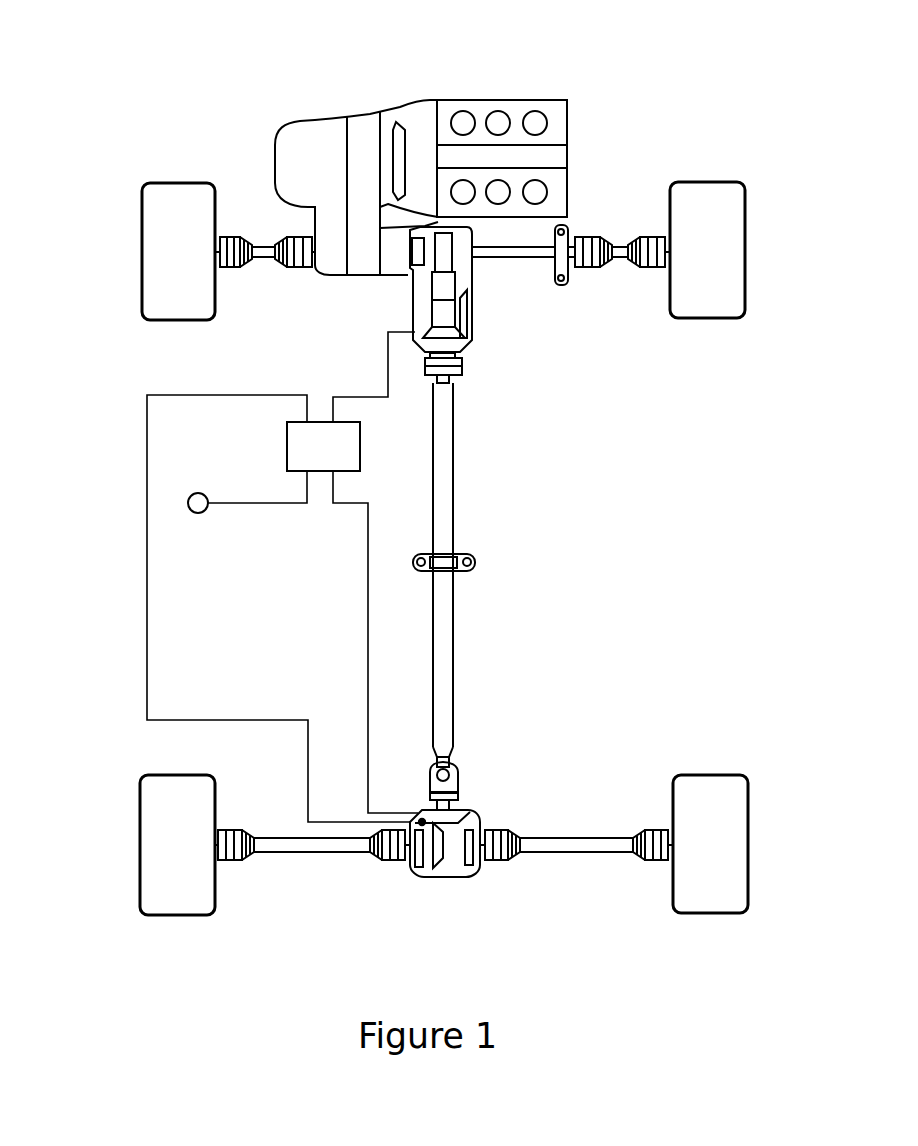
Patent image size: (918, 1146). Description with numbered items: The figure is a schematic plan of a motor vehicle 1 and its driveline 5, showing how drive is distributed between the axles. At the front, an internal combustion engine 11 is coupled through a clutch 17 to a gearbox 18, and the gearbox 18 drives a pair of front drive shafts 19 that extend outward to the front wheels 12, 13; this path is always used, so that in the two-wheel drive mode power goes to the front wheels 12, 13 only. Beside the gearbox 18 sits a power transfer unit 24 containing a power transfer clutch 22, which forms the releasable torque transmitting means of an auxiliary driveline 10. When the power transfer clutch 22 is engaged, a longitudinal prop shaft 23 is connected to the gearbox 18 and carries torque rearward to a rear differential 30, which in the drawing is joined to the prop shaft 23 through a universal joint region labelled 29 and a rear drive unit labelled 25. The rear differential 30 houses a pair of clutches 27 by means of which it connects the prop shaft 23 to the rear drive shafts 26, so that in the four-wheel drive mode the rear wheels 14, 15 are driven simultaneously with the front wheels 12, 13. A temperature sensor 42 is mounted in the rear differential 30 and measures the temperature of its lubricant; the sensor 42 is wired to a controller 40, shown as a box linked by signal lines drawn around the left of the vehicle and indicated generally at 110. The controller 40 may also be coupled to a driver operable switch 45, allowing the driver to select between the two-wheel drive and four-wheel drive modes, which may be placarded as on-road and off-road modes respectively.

The motor vehicle 1 is at (746, 59).
The driveline 5 is at (122, 487).
The auxiliary driveline 10 is at (472, 320).
The internal combustion engine 11 is at (566, 121).
The front wheel 12 is at (167, 195).
The front wheel 13 is at (722, 192).
The rear wheel 14 is at (168, 902).
The rear wheel 15 is at (692, 900).
The clutch 17 is at (433, 167).
The gearbox 18 is at (365, 135).
The front drive shafts 19 is at (265, 254).
The power transfer clutch 22 is at (417, 253).
The prop shaft 23 is at (445, 454).
The power transfer unit 24 is at (478, 295).
The rear drive unit 25 is at (476, 818).
The rear drive shafts 26 is at (325, 846).
The clutches 27 is at (412, 870).
The universal joint 29 is at (458, 773).
The rear differential 30 is at (432, 878).
The controller 40 is at (287, 447).
The temperature sensor 42 is at (421, 819).
The driver operable switch 45 is at (200, 514).
The signal line 110 is at (338, 538).